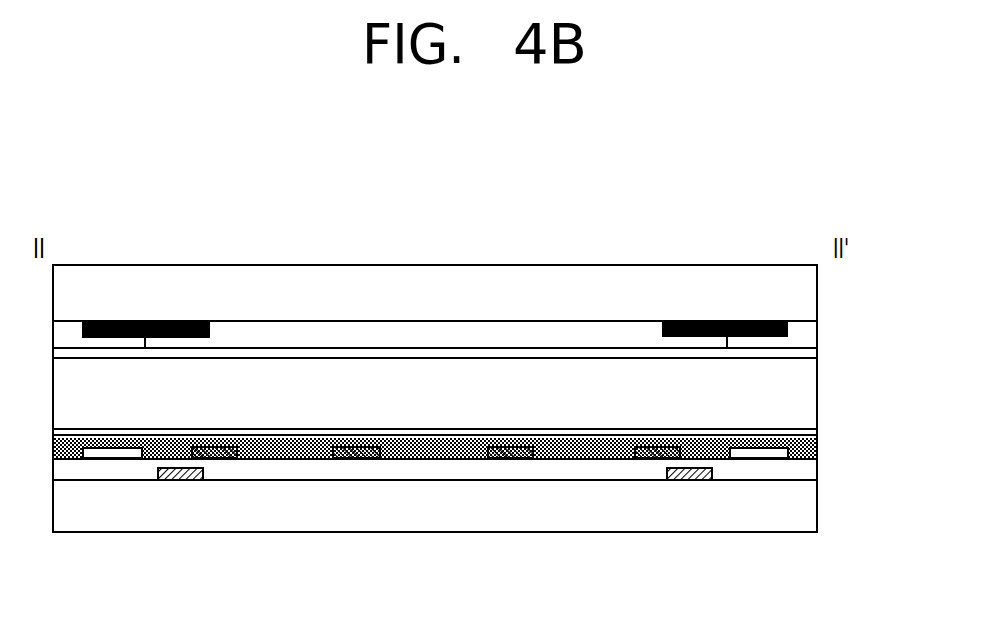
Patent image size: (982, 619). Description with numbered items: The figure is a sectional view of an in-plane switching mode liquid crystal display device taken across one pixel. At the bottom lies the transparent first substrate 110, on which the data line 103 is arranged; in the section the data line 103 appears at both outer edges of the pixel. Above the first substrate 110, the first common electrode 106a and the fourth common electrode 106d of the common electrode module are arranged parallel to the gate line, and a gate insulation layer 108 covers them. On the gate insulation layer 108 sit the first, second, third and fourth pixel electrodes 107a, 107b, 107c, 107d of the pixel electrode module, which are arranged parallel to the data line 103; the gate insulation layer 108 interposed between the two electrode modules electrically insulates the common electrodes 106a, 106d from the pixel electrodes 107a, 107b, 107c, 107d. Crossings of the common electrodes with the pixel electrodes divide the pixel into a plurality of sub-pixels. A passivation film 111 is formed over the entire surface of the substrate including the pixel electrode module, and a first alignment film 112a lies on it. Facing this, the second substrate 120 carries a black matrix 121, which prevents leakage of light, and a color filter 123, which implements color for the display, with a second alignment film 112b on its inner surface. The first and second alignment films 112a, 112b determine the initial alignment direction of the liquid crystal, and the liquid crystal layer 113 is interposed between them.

The data line 103 is at (108, 459).
The first common electrode 106a is at (180, 480).
The fourth common electrode 106d is at (688, 480).
The first pixel electrode 107a is at (225, 459).
The second pixel electrode 107b is at (358, 459).
The third pixel electrode 107c is at (512, 459).
The fourth pixel electrode 107d is at (643, 459).
The gate insulation layer 108 is at (812, 473).
The first substrate 110 is at (812, 508).
The passivation film 111 is at (812, 447).
The first alignment film 112a is at (812, 430).
The second alignment film 112b is at (812, 352).
The liquid crystal layer 113 is at (812, 390).
The second substrate 120 is at (812, 293).
The black matrix 121 is at (729, 320).
The color filter 123 is at (503, 332).